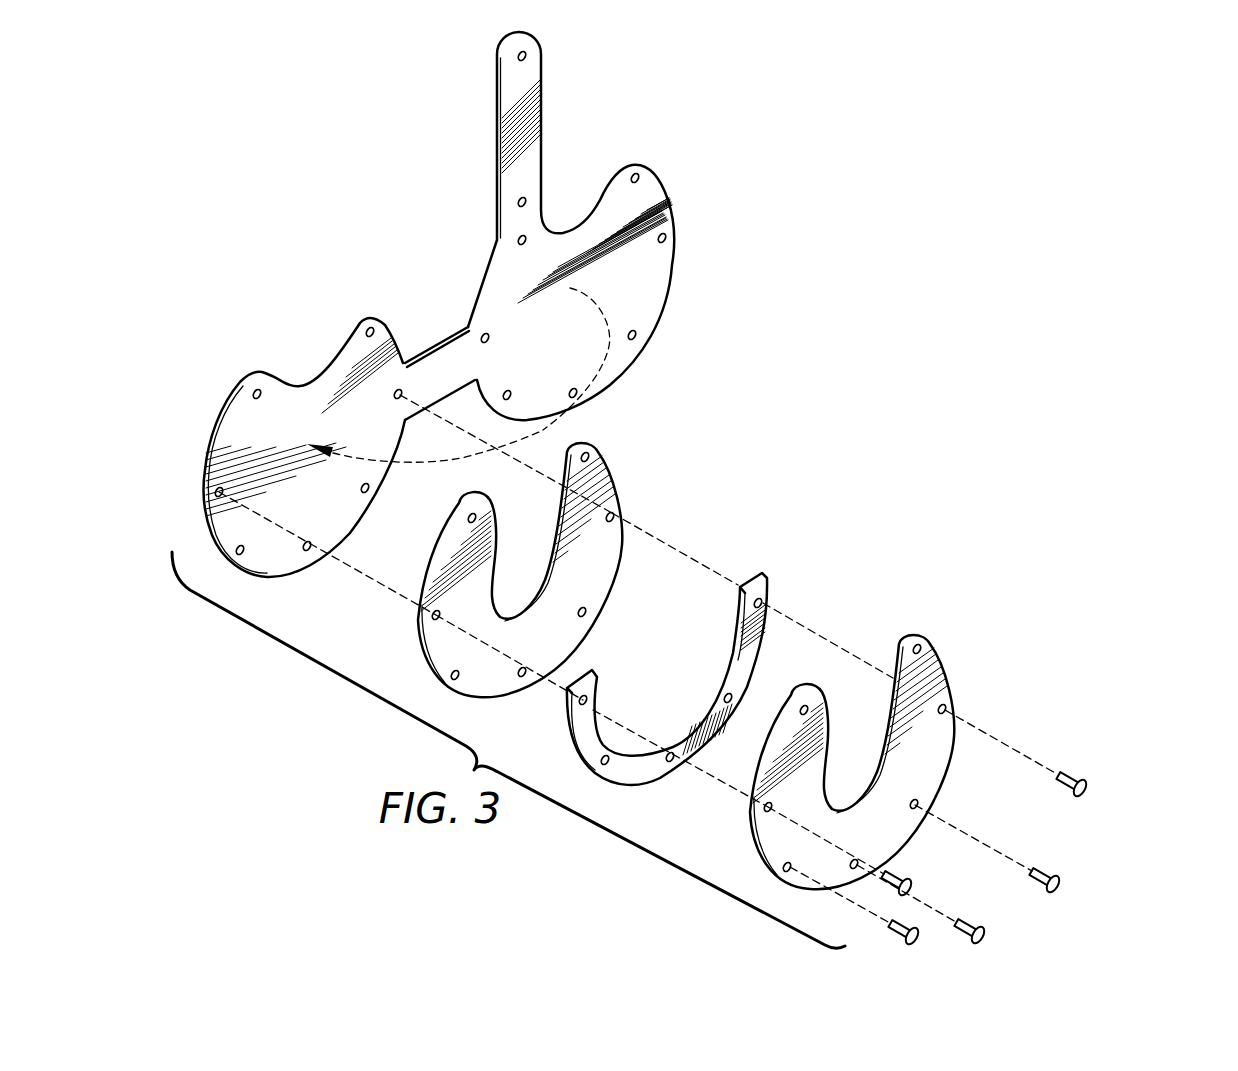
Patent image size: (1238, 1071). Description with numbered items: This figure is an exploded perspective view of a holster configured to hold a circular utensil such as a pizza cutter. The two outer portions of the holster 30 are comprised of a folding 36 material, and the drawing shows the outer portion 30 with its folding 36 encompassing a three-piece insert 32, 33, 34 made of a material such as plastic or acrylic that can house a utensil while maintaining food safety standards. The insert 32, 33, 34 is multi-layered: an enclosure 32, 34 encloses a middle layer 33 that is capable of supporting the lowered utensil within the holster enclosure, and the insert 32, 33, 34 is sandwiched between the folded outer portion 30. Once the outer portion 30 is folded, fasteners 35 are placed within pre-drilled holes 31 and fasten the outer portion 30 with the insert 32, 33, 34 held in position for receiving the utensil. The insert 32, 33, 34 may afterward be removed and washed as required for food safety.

The outer portion 30 is at (653, 207).
The holes 31 is at (633, 336).
The enclosure 32 is at (618, 470).
The middle layer 33 is at (755, 578).
The enclosure 34 is at (935, 662).
The fasteners 35 is at (1085, 785).
The folding 36 is at (432, 462).